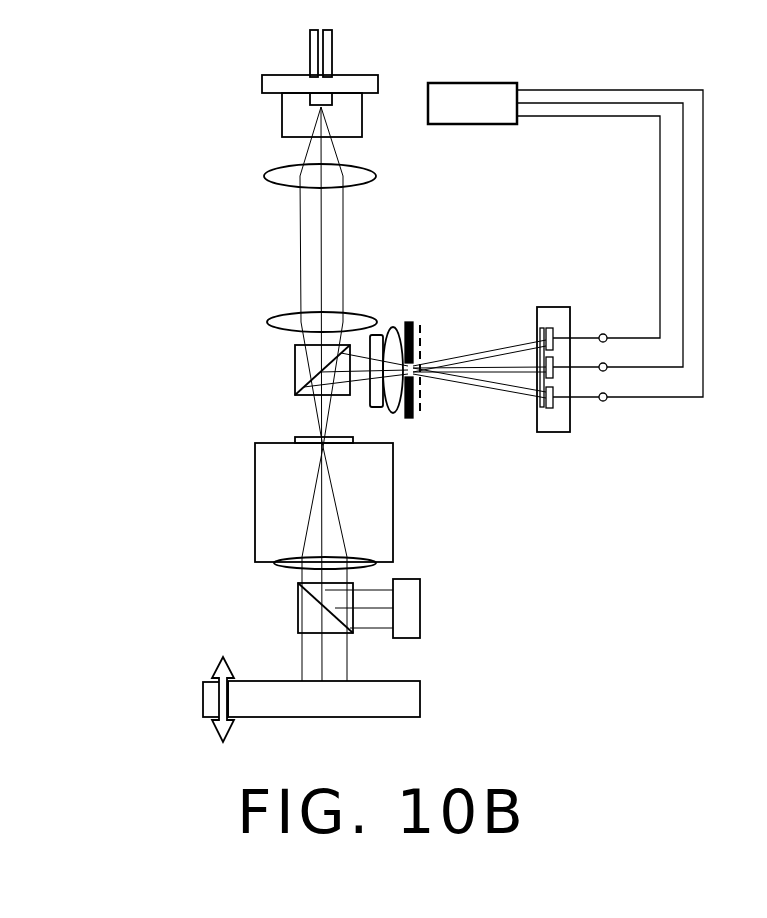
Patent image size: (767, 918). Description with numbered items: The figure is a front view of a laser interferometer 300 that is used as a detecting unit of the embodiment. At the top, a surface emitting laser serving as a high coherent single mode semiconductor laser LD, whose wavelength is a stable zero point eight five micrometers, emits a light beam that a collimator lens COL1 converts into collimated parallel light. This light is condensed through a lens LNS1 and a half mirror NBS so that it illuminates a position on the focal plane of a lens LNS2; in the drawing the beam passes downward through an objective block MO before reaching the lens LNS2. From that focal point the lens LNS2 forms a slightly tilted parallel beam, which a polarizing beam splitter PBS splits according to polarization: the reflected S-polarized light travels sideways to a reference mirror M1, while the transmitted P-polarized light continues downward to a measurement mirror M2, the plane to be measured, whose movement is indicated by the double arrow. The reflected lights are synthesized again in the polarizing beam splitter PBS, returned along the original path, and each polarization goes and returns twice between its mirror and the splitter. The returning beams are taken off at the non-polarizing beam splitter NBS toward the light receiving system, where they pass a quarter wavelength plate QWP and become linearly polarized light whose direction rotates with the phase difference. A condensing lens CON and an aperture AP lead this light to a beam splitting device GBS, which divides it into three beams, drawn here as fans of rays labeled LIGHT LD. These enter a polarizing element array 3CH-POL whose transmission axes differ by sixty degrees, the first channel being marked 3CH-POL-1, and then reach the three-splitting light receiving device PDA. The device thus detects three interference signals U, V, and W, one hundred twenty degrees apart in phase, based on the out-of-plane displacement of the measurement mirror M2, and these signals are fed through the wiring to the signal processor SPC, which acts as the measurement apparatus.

The laser interferometer 300 is at (750, 60).
The semiconductor laser LD is at (282, 114).
The collimator lens COL1 is at (270, 172).
The lens LNS1 is at (283, 315).
The non-polarizing beam splitter NBS is at (295, 374).
The microscope objective MO is at (270, 441).
The lens LNS2 is at (290, 570).
The polarizing beam splitter PBS is at (298, 622).
The reference mirror M1 is at (421, 590).
The measurement mirror M2 is at (403, 679).
The quarter wavelength plate QWP is at (378, 408).
The condensing lens CON is at (391, 328).
The beam splitting device GBS is at (410, 420).
The aperture AP is at (421, 322).
The three-splitting light receiving device PDA is at (532, 310).
The polarizing element array 3CH-POL is at (537, 332).
The polarizer channel 1 3CH-POL-1 is at (556, 332).
The light of laser diode LIGHT LD is at (508, 397).
The signal processor SPC is at (565, 240).
The interference signal U is at (591, 351).
The interference signal V is at (590, 381).
The interference signal W is at (592, 412).